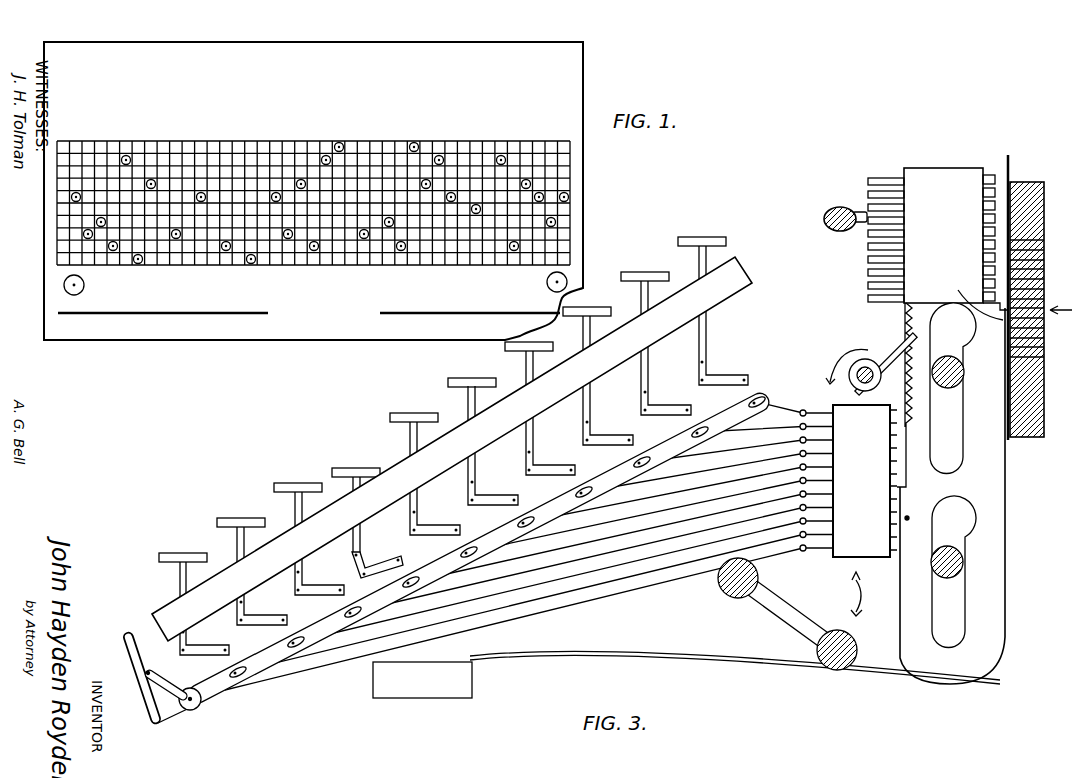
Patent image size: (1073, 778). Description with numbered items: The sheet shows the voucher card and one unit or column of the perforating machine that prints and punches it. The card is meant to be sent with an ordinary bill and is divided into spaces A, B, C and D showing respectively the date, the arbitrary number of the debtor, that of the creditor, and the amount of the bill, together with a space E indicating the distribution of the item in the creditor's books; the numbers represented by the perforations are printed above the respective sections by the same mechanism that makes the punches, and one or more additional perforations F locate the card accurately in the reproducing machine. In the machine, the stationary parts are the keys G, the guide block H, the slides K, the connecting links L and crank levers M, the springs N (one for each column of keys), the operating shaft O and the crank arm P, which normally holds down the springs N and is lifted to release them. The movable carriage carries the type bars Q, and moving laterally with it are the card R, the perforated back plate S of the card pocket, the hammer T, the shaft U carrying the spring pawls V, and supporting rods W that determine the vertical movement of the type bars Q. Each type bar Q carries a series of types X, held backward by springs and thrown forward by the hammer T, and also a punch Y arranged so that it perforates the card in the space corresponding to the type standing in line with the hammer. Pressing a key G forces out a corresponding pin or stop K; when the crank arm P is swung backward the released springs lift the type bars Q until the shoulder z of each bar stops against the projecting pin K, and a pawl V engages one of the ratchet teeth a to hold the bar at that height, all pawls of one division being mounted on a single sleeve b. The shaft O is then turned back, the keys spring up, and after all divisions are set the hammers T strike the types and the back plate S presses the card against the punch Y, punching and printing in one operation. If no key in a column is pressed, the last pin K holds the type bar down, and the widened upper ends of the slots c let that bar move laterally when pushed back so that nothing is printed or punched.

In FIG. 1, the date space A is at (55, 237).
In FIG. 1, the debtor number space B is at (248, 262).
In FIG. 1, the creditor number space C is at (360, 262).
In FIG. 1, the amount space D is at (482, 262).
In FIG. 1, the distribution space E is at (200, 265).
In FIG. 1, the additional perforation F is at (84, 285).
In FIG. 3, the keys G is at (185, 550).
In FIG. 3, the crank levers M is at (722, 378).
In FIG. 3, the connecting links L is at (782, 400).
In FIG. 3, the slides (pins or stops) K is at (840, 425).
In FIG. 3, the guide block H is at (854, 522).
In FIG. 3, the springs N is at (620, 660).
In FIG. 3, the operating shaft O is at (728, 596).
In FIG. 3, the crank arm (rod) P is at (857, 645).
In FIG. 3, the type bars Q is at (943, 235).
In FIG. 3, the card R is at (1010, 165).
In FIG. 3, the perforated back plate S is at (1046, 210).
In FIG. 3, the hammer T is at (828, 232).
In FIG. 3, the shaft U is at (875, 357).
In FIG. 3, the spring pawls V is at (905, 362).
In FIG. 3, the rods W is at (978, 563).
In FIG. 3, the types X is at (891, 162).
In FIG. 3, the punch Y is at (972, 308).
In FIG. 3, the ratchet teeth a is at (912, 398).
In FIG. 3, the sleeve b is at (876, 374).
In FIG. 3, the slots c is at (952, 493).
In FIG. 3, the shoulder z is at (905, 492).